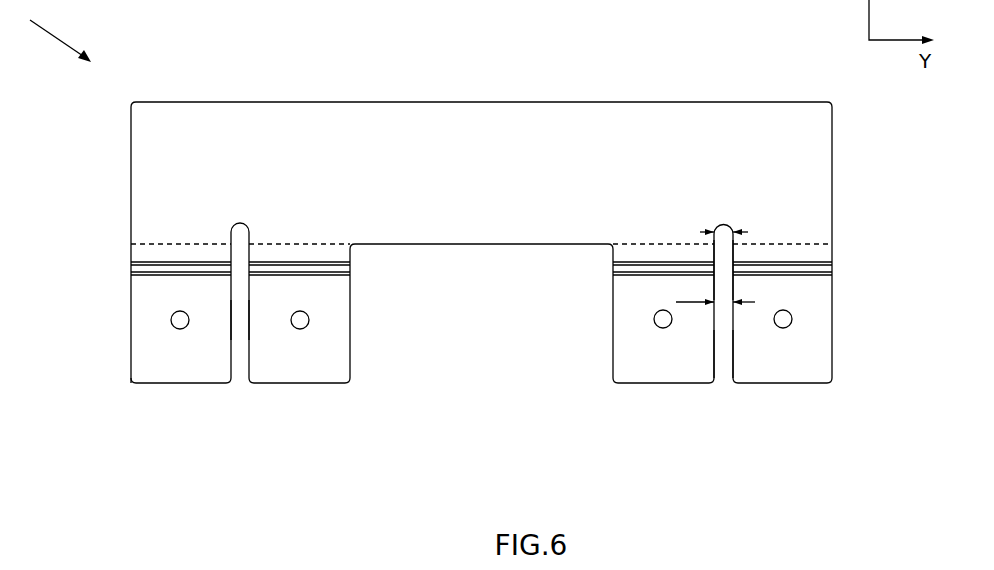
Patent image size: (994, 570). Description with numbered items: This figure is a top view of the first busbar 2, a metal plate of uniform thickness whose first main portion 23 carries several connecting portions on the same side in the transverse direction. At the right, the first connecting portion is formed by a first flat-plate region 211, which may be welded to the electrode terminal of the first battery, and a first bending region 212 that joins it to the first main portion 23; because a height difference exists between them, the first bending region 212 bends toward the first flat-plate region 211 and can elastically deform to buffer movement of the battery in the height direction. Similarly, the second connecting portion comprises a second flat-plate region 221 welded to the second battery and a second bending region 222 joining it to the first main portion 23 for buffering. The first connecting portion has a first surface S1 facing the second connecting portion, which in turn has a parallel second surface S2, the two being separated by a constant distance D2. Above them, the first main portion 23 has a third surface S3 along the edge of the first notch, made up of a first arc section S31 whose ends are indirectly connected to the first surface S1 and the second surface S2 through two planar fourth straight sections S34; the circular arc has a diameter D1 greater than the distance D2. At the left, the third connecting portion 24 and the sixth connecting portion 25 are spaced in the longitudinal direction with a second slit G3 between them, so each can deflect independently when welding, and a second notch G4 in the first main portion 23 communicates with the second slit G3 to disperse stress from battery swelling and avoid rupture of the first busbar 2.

The first busbar 2 is at (53, 34).
The first main portion 23 is at (450, 117).
The third connecting portion 24 is at (313, 372).
The sixth connecting portion 25 is at (178, 372).
The first flat-plate region 211 is at (832, 322).
The first bending region 212 is at (832, 264).
The second flat-plate region 221 is at (630, 328).
The second bending region 222 is at (637, 263).
The second slit G3 is at (238, 320).
The second notch G4 is at (245, 232).
The first surface S1 is at (733, 362).
The second surface S2 is at (714, 362).
The third surface S3 is at (680, 186).
The first arc section S31 is at (733, 233).
The fourth straight section S34 is at (712, 236).
The diameter of the circular arc surface D1 is at (739, 231).
The distance between the first surface and the second surface D2 is at (714, 293).